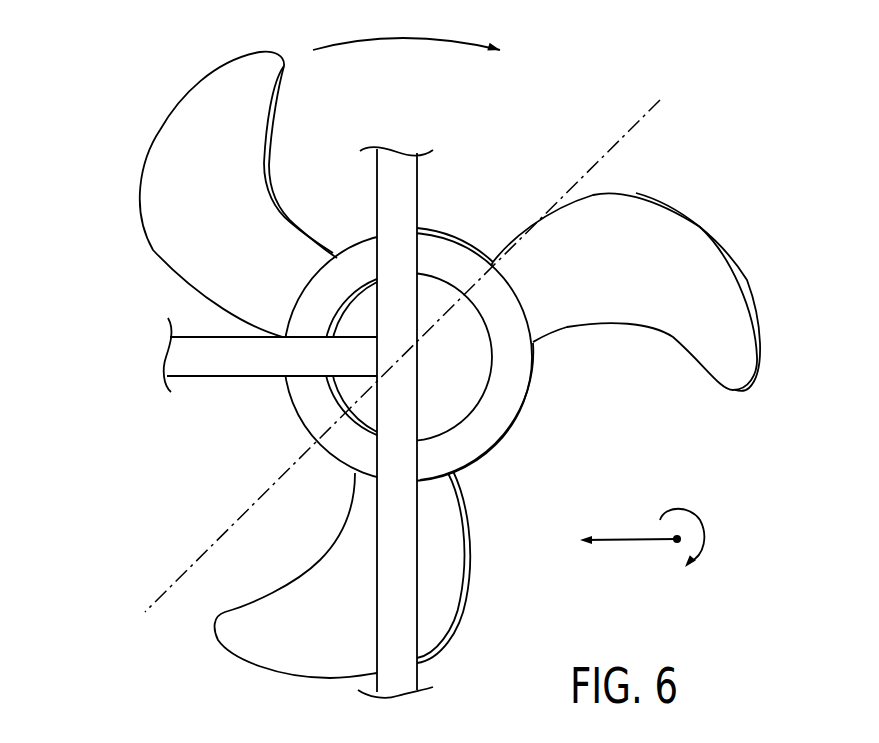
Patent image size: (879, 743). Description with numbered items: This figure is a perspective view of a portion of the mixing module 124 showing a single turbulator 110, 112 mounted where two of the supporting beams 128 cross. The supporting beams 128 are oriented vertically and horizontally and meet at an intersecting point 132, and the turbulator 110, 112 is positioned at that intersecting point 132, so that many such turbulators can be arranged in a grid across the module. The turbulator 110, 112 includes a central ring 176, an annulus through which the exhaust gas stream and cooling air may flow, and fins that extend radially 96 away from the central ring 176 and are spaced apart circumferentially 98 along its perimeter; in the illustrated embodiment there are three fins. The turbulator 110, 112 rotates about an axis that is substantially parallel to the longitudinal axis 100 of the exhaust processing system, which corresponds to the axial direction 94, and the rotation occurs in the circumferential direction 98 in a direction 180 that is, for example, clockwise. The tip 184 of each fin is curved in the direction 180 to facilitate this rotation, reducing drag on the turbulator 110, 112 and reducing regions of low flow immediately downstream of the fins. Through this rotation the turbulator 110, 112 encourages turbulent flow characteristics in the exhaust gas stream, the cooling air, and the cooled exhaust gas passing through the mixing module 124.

The axial direction or axis 94 is at (676, 545).
The radial direction or axis 96 is at (632, 538).
The circumferential direction or axis 98 is at (700, 520).
The longitudinal axis 100 is at (188, 572).
The turbulator 110 is at (484, 357).
The turbulator 112 is at (540, 423).
The mixing module 124 is at (92, 242).
The supporting beams 128 is at (218, 376).
The intersecting points 132 is at (430, 350).
The central ring 176 is at (458, 240).
The direction of rotation 180 is at (400, 35).
The tip 184 is at (197, 80).